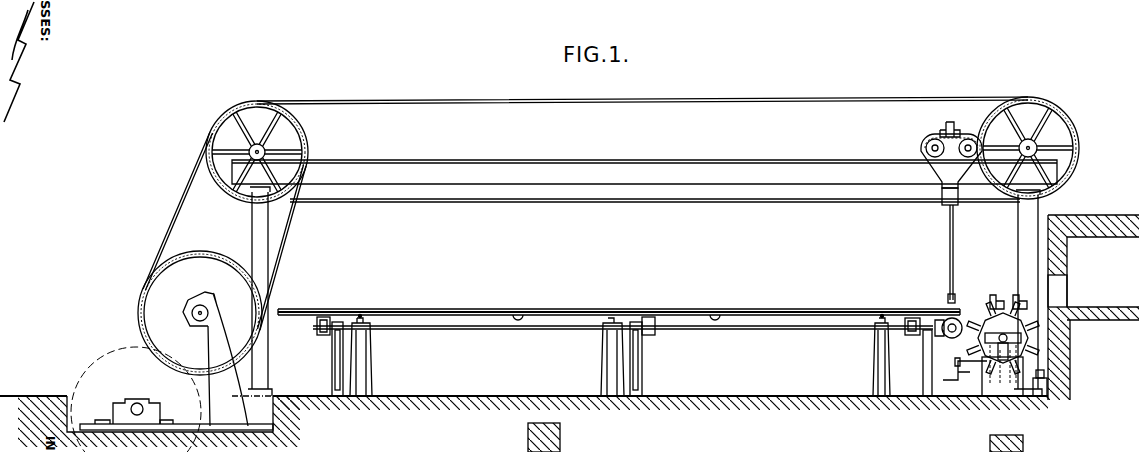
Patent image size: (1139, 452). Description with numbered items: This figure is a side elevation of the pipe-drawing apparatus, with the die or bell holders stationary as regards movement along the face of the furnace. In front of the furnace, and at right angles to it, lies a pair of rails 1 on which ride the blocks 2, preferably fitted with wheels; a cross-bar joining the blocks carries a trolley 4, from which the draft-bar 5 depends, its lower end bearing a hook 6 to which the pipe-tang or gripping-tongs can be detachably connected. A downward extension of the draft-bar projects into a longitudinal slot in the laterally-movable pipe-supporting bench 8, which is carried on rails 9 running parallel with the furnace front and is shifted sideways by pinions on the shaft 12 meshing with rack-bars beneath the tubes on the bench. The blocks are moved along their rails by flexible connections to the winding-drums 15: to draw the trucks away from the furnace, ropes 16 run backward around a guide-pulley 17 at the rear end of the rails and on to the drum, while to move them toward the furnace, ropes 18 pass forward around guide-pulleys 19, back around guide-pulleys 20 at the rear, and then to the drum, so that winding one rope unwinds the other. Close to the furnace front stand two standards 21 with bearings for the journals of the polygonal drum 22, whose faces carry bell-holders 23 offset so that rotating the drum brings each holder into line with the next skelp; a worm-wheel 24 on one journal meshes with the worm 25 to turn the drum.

The rails 1 is at (737, 166).
The blocks 2 is at (951, 169).
The trolley 4 is at (946, 128).
The draft-bar 5 is at (956, 236).
The hook 6 is at (948, 300).
The pipe-supporting bench 8 is at (768, 330).
The rails 9 is at (362, 318).
The shaft 12 is at (517, 331).
The winding-drums 15 is at (200, 338).
The ropes 16 is at (690, 203).
The guide-pulley 17 is at (235, 193).
The ropes 18 is at (724, 100).
The guide-pulleys 19 is at (1080, 148).
The guide-pulleys 20 is at (875, 318).
The standards 21 is at (990, 384).
The polygonal drum 22 is at (1003, 338).
The bell-holders 23 is at (997, 295).
The worm-wheel 24 is at (1058, 345).
The worm 25 is at (1012, 404).